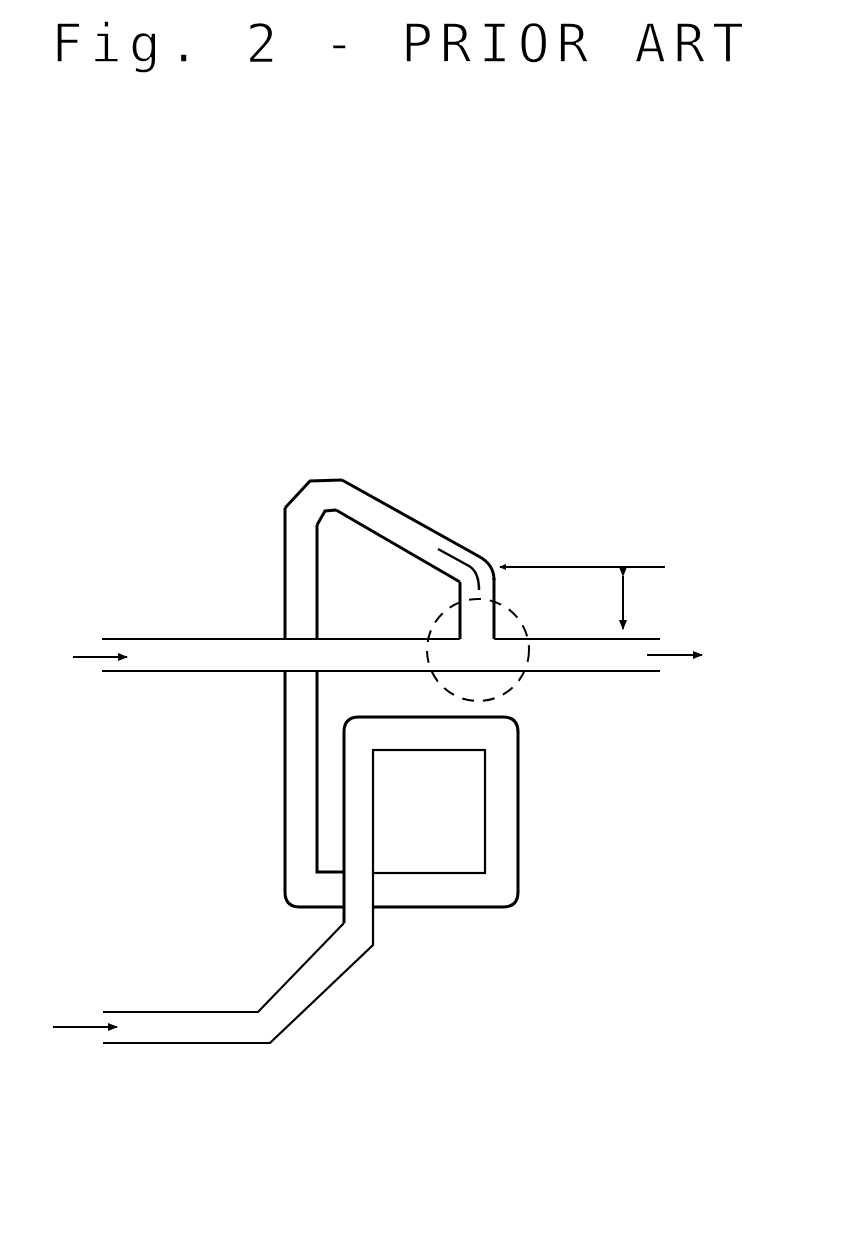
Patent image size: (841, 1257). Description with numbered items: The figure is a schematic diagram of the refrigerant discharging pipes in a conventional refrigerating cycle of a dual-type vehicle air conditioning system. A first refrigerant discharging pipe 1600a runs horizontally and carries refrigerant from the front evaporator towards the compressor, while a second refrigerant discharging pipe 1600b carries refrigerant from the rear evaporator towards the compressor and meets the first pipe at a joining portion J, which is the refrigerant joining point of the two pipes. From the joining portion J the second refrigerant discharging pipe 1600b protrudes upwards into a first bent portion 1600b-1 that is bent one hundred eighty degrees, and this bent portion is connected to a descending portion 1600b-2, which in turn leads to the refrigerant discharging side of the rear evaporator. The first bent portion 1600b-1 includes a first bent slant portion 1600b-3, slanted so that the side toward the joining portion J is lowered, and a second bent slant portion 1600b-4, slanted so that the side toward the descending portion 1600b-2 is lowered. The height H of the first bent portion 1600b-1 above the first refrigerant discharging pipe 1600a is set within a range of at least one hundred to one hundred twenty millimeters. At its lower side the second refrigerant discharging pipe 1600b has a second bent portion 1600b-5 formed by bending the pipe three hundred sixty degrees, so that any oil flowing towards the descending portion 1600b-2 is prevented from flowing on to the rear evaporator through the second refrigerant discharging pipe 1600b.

The first refrigerant discharging pipe 1600a is at (183, 662).
The second refrigerant discharging pipe 1600b is at (202, 1035).
The first bent portion 1600b-1 is at (492, 605).
The descending portion 1600b-2 is at (290, 570).
The first bent slant portion 1600b-3 is at (407, 535).
The second bent slant portion 1600b-4 is at (331, 512).
The second bent portion 1600b-5 is at (508, 858).
The height of the first bent portion H is at (583, 598).
The joining portion J is at (478, 655).